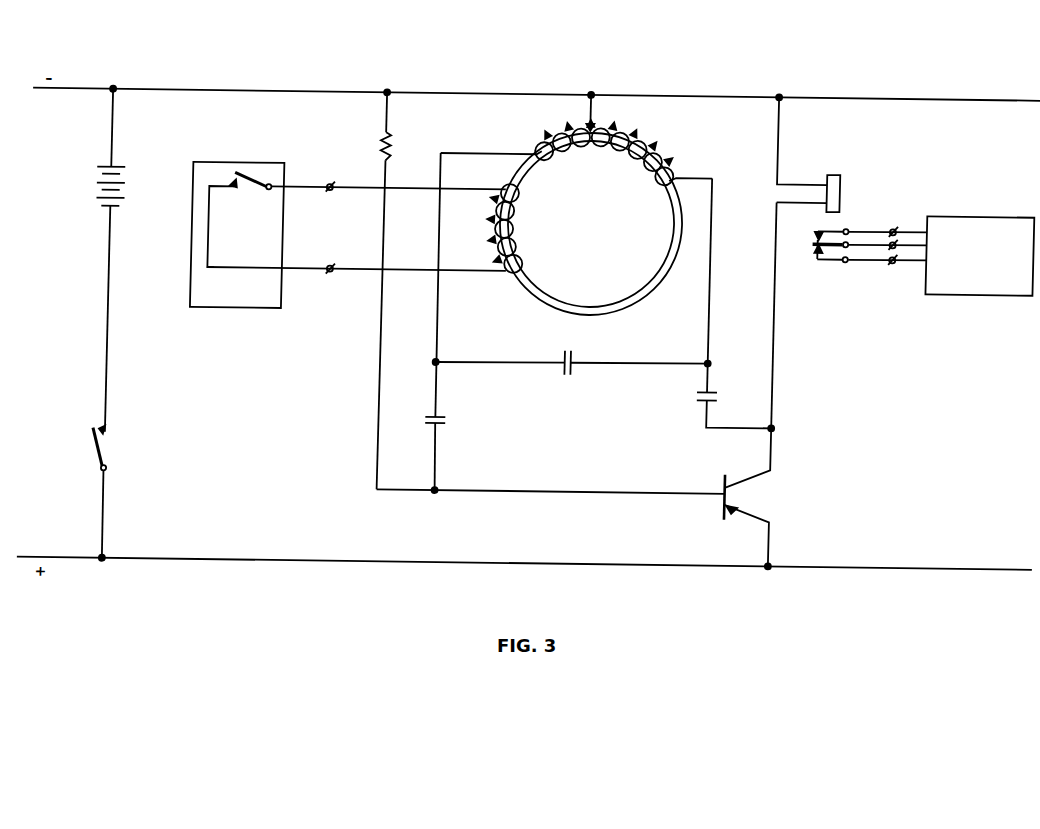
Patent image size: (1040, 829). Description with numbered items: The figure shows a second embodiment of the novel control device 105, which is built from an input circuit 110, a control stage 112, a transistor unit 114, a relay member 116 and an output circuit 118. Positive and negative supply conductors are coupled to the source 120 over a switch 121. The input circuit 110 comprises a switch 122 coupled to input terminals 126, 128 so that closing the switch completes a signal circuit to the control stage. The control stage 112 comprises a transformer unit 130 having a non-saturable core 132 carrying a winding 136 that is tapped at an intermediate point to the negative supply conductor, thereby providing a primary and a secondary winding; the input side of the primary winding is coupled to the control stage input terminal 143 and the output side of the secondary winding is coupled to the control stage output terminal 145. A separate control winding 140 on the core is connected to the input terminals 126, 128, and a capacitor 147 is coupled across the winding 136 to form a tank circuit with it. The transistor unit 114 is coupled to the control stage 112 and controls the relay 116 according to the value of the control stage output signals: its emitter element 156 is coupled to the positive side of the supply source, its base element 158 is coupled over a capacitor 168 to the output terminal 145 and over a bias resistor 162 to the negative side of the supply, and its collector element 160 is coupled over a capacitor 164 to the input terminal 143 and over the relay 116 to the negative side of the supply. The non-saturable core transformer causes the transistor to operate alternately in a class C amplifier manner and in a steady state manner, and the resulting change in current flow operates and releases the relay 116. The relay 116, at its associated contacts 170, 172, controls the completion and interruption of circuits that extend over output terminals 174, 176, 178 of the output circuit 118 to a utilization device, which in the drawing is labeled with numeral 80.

The control device 105 is at (540, 81).
The input circuit 110 is at (259, 152).
The control stage 112 is at (657, 128).
The transistor unit 114 is at (636, 497).
The relay member 116 is at (811, 261).
The output circuit 118 is at (948, 193).
The source 120 is at (125, 259).
The switch 121 is at (112, 494).
The switch 122 is at (235, 218).
The input terminal 126 is at (389, 183).
The input terminal 128 is at (357, 263).
The transformer unit 130 is at (592, 282).
The non-saturable core 132 is at (660, 272).
The winding 136 is at (588, 151).
The control winding 140 is at (516, 218).
The control stage input terminal 143 is at (725, 286).
The control stage output terminal 145 is at (423, 285).
The capacitor 147 is at (571, 359).
The emitter element 156 is at (750, 516).
The base element 158 is at (551, 483).
The collector element 160 is at (758, 475).
The bias resistor 162 is at (366, 289).
The capacitor 164 is at (722, 411).
The capacitor 168 is at (448, 454).
The relay contact 170 is at (813, 232).
The relay contact 172 is at (812, 251).
The output terminal 174 is at (873, 228).
The output terminal 176 is at (874, 249).
The output terminal 178 is at (916, 262).
The utilization device 80 is at (993, 212).